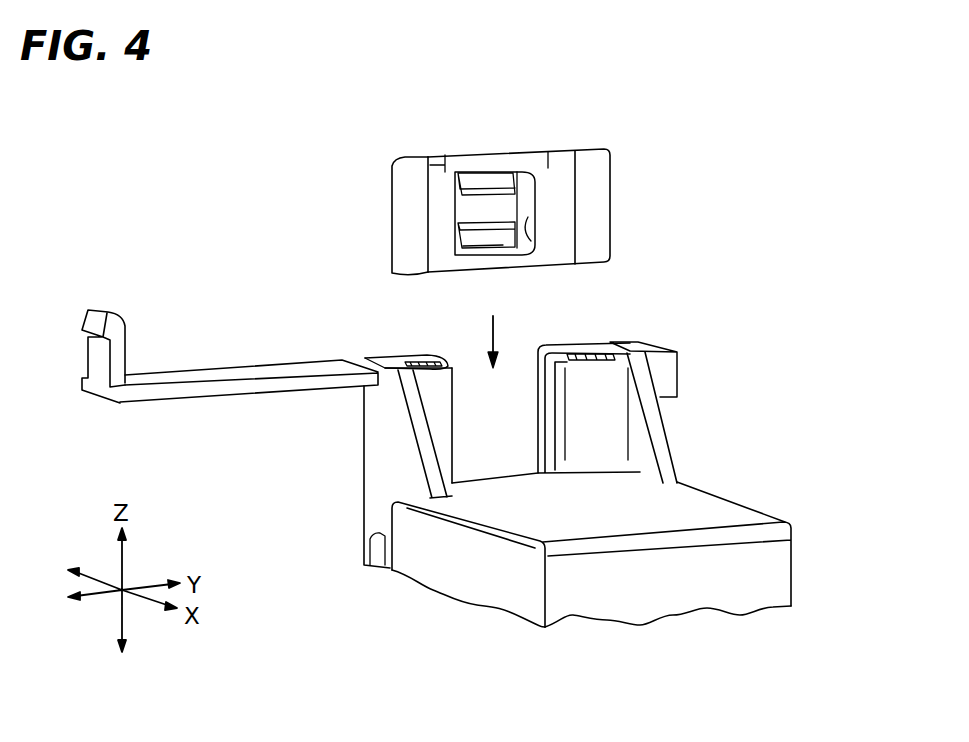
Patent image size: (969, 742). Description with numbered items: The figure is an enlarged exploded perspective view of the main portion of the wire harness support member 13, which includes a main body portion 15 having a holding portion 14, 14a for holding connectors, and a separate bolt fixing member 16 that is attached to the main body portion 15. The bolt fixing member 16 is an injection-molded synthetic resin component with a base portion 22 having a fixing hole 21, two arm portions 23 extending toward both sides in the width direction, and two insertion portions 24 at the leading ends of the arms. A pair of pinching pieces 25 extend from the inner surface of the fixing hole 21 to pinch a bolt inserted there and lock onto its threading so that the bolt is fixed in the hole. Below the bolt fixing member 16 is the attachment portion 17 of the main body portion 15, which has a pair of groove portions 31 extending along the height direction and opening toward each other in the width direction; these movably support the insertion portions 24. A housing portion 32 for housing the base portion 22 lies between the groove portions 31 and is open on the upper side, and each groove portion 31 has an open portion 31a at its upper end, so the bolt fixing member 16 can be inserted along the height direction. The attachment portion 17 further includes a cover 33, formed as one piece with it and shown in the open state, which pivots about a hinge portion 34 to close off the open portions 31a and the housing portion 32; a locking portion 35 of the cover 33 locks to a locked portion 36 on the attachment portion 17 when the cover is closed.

The wire harness support member 13 is at (793, 564).
The holding portion 14 is at (621, 485).
The upper surface 14a is at (688, 490).
The main body portion 15 is at (653, 564).
The bolt fixing member 16 is at (507, 196).
The attachment portion 17 is at (598, 452).
The fixing hole 21 is at (524, 238).
The base portion 22 is at (511, 152).
The arm portion 23 is at (440, 166).
The insertion portion 24 is at (400, 206).
The pinching piece 25 is at (480, 178).
The groove portion 31 is at (521, 392).
The open portion 31a is at (436, 356).
The housing portion 32 is at (455, 426).
The cover 33 is at (204, 381).
The hinge portion 34 is at (365, 358).
The locking portion 35 is at (100, 356).
The locked portion 36 is at (648, 340).